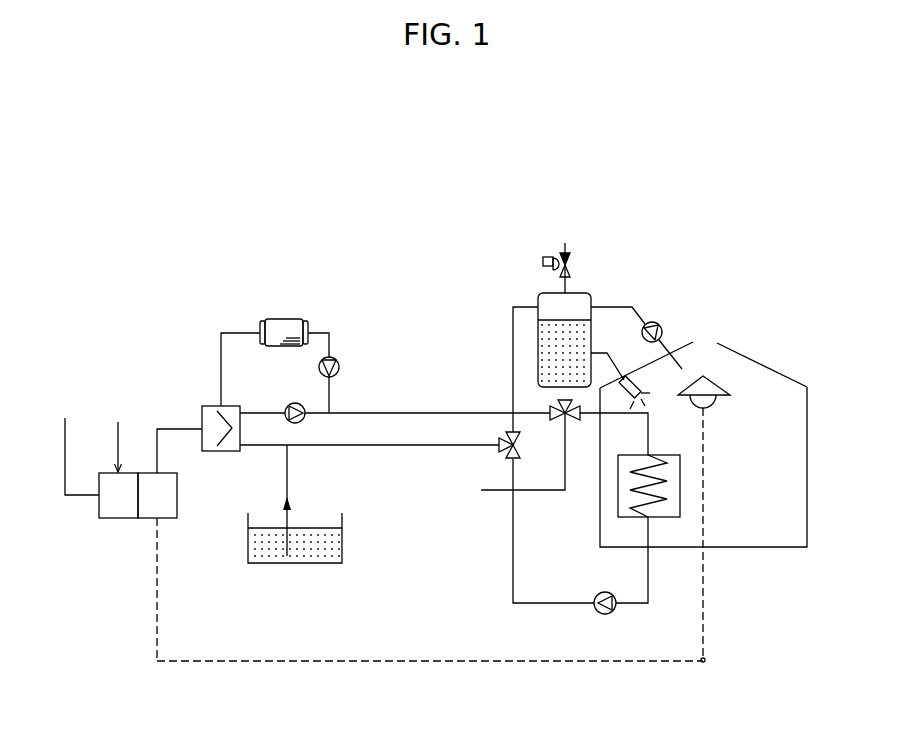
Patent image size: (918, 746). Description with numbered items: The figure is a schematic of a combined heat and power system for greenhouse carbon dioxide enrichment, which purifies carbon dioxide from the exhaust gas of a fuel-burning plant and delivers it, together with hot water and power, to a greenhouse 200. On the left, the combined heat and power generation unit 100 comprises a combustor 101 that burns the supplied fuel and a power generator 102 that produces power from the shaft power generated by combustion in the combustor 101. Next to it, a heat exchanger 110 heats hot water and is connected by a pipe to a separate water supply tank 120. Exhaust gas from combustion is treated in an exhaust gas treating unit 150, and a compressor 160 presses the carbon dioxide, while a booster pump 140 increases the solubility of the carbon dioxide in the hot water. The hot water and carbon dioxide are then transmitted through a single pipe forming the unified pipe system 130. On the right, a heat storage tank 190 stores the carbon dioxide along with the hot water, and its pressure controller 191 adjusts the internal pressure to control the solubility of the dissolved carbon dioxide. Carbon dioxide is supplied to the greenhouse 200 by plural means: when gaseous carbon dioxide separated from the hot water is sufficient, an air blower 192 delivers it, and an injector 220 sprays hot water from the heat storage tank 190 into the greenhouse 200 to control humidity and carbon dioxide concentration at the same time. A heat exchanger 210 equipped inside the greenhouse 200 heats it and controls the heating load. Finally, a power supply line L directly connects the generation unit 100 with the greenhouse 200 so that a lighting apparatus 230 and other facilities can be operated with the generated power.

The combined heat and power generation unit 100 is at (118, 519).
The combustor 101 is at (91, 457).
The power generator 102 is at (152, 528).
The heat exchanger 110 is at (200, 405).
The water supply tank 120 is at (280, 567).
The unified pipe system 130 is at (387, 410).
The booster pump 140 is at (284, 404).
The exhaust gas treating unit 150 is at (254, 321).
The compressor 160 is at (342, 358).
The heat storage tank 190 is at (579, 283).
The pressure controller 191 is at (549, 283).
The air blower 192 is at (659, 323).
The greenhouse 200 is at (765, 549).
The heat exchanger 210 is at (672, 520).
The injector 220 is at (647, 383).
The lighting apparatus 230 is at (732, 387).
The power supply line L is at (487, 667).